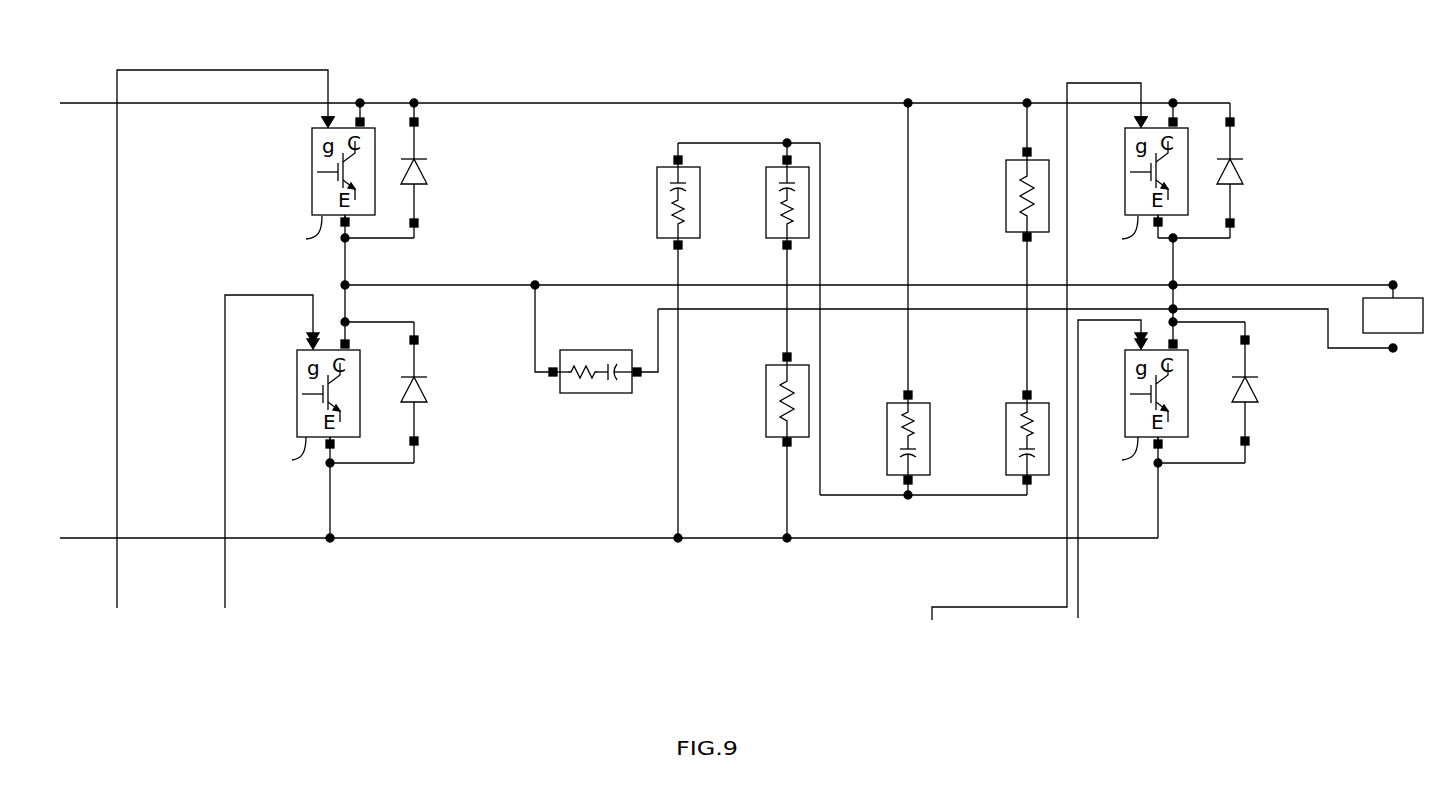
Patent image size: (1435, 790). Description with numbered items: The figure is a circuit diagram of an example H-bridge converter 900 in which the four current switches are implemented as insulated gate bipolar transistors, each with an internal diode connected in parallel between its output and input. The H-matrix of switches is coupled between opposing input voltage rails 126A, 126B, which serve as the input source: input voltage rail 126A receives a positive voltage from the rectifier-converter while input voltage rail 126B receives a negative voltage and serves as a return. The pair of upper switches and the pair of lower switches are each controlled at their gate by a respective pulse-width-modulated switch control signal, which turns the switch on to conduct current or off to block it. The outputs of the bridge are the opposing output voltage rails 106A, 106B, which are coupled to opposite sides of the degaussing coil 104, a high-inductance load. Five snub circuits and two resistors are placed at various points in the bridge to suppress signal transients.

The H-bridge converter 900 is at (834, 48).
The input voltage rail 126A is at (84, 103).
The input voltage rail 126B is at (86, 538).
The output voltage rail 106A is at (1278, 283).
The output voltage rail 106B is at (1265, 311).
The degaussing coil 104 is at (1408, 298).